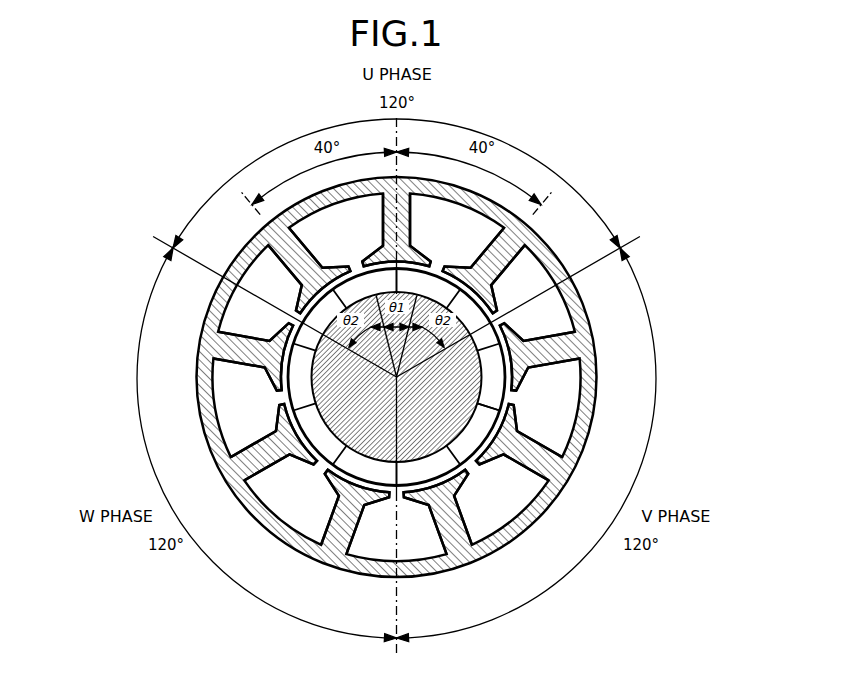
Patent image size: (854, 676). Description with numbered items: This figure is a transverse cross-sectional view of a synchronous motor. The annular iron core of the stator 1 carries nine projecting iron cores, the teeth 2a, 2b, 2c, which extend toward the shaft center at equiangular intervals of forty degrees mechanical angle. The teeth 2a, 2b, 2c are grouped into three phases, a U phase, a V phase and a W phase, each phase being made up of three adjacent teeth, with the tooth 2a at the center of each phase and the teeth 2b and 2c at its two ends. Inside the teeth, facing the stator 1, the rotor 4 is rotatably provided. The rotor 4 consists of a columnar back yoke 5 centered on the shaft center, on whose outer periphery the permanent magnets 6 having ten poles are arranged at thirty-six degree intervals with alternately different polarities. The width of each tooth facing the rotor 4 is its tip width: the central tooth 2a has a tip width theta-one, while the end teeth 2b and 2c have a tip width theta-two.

The stator 1 is at (533, 240).
The tooth 2a is at (403, 212).
The tooth 2b is at (290, 264).
The tooth 2c is at (496, 255).
The rotor 4 is at (500, 327).
The back yoke 5 is at (462, 376).
The permanent magnet 6 is at (497, 403).